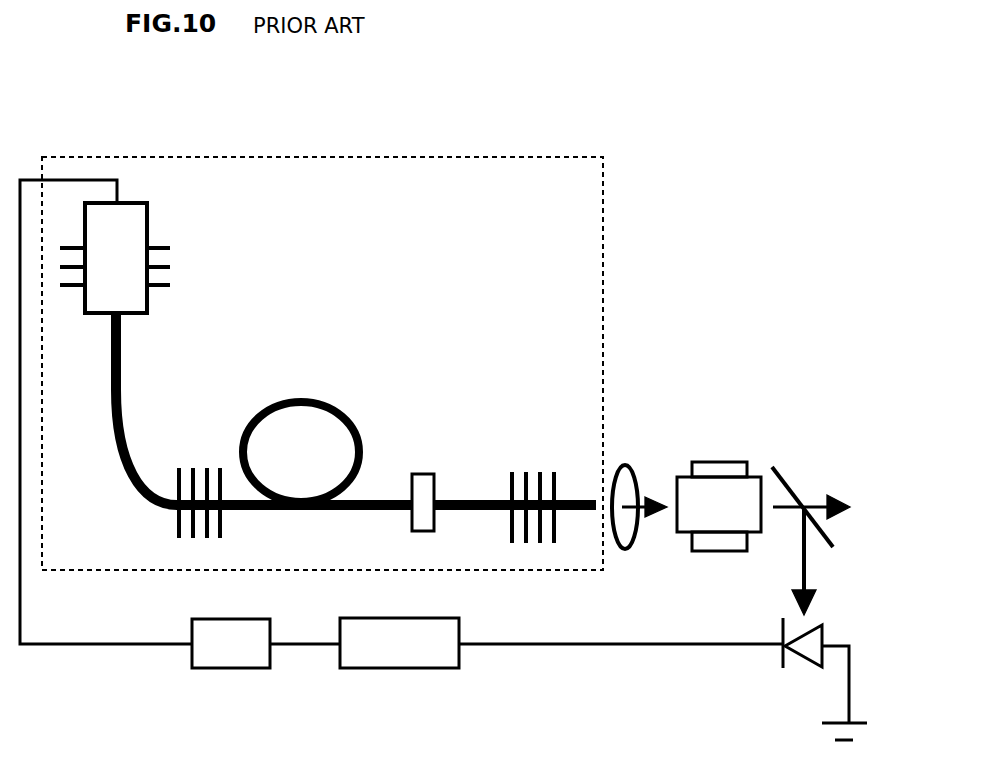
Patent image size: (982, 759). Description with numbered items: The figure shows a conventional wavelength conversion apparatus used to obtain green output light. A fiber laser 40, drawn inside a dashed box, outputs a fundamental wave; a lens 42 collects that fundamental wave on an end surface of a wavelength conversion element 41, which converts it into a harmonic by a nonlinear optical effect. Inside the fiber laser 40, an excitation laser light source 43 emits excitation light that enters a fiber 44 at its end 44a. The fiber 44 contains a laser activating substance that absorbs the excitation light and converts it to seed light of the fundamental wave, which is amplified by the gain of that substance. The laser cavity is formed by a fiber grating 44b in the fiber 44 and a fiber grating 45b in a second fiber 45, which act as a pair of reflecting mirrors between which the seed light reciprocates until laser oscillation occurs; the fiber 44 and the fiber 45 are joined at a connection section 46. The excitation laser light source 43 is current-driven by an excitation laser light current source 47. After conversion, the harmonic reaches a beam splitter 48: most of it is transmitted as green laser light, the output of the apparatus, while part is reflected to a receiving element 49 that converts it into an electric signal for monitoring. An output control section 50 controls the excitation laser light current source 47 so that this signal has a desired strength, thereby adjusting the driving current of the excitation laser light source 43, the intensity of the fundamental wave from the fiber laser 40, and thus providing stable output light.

The fiber laser 40 is at (485, 142).
The wavelength conversion element 41 is at (711, 495).
The lens 42 is at (645, 456).
The excitation laser light source 43 is at (162, 223).
The fiber 44 is at (336, 390).
The end of fiber 44a is at (134, 415).
The fiber grating 44b is at (202, 441).
The fiber 45 is at (464, 488).
The fiber grating 45b is at (534, 451).
The connection section 46 is at (420, 459).
The excitation laser light current source 47 is at (227, 677).
The beam splitter 48 is at (803, 465).
The receiving element 49 is at (793, 676).
The output control section 50 is at (397, 678).